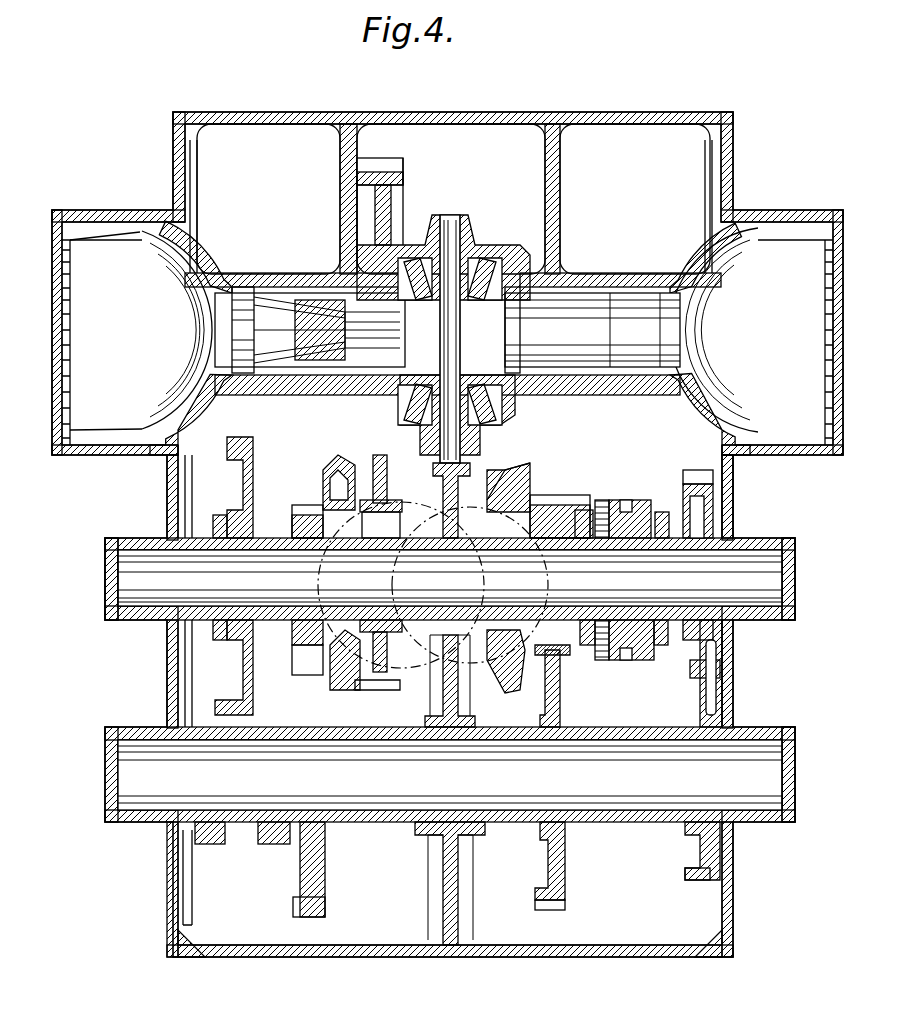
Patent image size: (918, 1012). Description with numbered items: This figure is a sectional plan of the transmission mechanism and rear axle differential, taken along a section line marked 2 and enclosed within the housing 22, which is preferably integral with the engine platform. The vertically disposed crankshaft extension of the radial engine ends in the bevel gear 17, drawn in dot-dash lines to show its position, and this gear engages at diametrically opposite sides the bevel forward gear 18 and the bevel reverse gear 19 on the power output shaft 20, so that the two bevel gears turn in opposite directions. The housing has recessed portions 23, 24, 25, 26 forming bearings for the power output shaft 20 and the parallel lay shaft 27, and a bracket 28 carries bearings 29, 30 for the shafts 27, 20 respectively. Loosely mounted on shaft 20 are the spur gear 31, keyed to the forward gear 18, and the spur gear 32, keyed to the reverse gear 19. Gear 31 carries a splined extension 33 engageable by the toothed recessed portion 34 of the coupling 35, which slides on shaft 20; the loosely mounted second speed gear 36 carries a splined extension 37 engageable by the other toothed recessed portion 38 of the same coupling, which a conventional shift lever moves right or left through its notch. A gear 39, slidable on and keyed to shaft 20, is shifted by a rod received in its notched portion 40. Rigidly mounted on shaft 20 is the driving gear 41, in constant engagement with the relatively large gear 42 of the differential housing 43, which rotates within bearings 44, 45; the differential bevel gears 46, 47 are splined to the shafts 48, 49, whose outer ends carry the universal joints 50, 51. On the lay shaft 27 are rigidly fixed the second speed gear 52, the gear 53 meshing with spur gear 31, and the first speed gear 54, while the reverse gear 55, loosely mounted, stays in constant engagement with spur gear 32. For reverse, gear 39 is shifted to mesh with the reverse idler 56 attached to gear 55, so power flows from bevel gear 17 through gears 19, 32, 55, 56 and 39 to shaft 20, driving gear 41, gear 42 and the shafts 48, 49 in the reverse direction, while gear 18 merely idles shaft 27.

The section line 2 is at (438, 997).
The bevel gear 17 is at (422, 492).
The bevel forward gear 18 is at (505, 472).
The bevel reverse gear 19 is at (342, 456).
The power output shaft 20 is at (778, 555).
The housing 22 is at (735, 500).
The recessed portion 23 is at (795, 594).
The recessed portion 24 is at (106, 600).
The recessed portion 25 is at (795, 780).
The recessed portion 26 is at (106, 780).
The lay shaft 27 is at (742, 770).
The bracket 28 is at (466, 886).
The bearing 29 is at (428, 726).
The bearing 30 is at (470, 500).
The spur gear 31 is at (548, 504).
The spur gear 32 is at (303, 505).
The splined extension 33 is at (584, 510).
The toothed recessed portion 34 is at (604, 500).
The coupling 35 is at (632, 502).
The second speed gear 36 is at (692, 478).
The splined extension 37 is at (664, 512).
The toothed recessed portion 38 is at (644, 655).
The gear 39 is at (254, 462).
The notched portion 40 is at (218, 515).
The driving gear 41 is at (372, 655).
The gear 42 is at (400, 166).
The differential housing 43 is at (468, 228).
The bearing 44 is at (285, 273).
The bearing 45 is at (636, 199).
The differential bevel gear 46 is at (422, 300).
The differential bevel gear 47 is at (478, 300).
The shaft 48 is at (345, 378).
The shaft 49 is at (520, 338).
The universal joint 50 is at (137, 338).
The universal joint 51 is at (751, 336).
The second speed gear 52 is at (688, 690).
The gear 53 is at (562, 707).
The first speed gear 54 is at (210, 846).
The reverse gear 55 is at (327, 890).
The reverse idler 56 is at (274, 846).